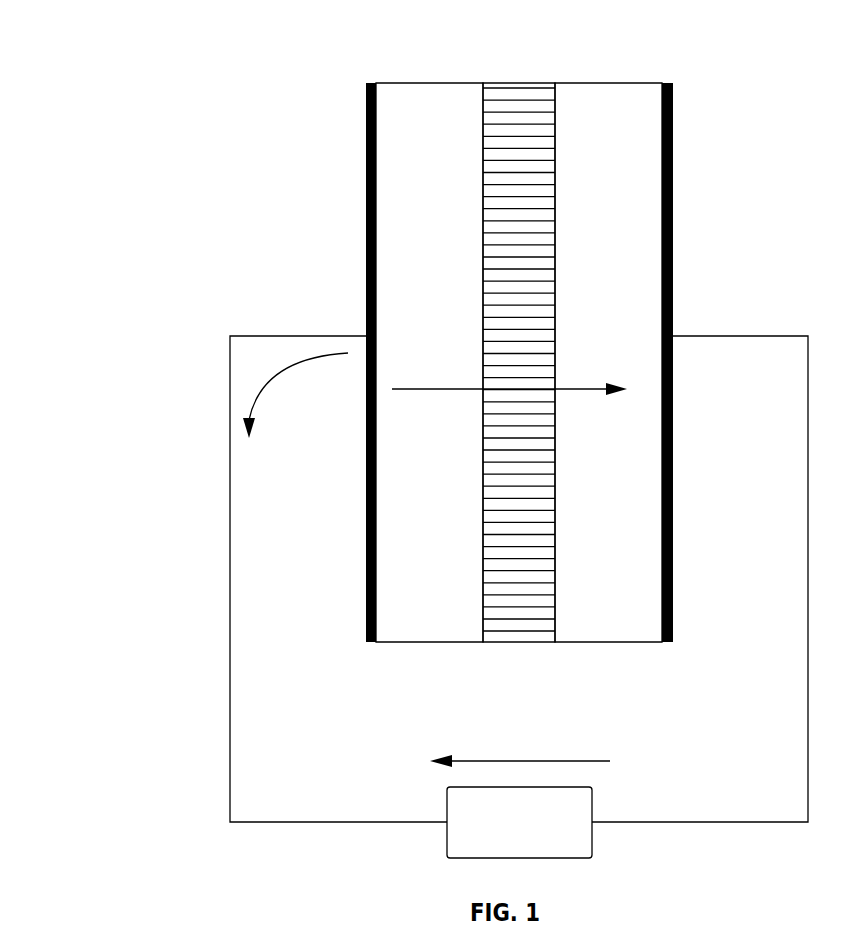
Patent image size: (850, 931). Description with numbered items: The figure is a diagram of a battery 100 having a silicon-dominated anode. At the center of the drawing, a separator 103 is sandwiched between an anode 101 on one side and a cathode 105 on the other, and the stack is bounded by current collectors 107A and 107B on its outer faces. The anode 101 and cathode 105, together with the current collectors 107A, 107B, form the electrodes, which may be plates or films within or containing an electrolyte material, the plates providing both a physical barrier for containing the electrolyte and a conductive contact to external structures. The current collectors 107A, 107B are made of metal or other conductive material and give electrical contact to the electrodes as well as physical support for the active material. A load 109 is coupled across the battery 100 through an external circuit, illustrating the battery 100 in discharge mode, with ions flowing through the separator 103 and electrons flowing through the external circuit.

The battery 100 is at (140, 100).
The anode 101 is at (409, 297).
The separator 103 is at (520, 83).
The cathode 105 is at (590, 299).
The current collector 107A is at (366, 108).
The current collector 107B is at (673, 108).
The load 109 is at (499, 847).